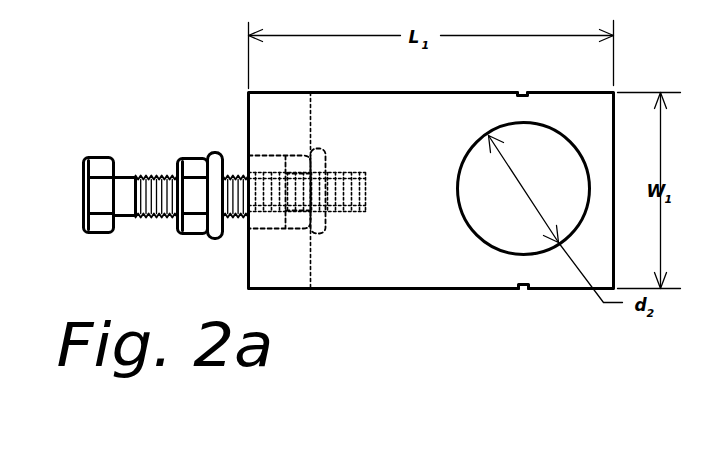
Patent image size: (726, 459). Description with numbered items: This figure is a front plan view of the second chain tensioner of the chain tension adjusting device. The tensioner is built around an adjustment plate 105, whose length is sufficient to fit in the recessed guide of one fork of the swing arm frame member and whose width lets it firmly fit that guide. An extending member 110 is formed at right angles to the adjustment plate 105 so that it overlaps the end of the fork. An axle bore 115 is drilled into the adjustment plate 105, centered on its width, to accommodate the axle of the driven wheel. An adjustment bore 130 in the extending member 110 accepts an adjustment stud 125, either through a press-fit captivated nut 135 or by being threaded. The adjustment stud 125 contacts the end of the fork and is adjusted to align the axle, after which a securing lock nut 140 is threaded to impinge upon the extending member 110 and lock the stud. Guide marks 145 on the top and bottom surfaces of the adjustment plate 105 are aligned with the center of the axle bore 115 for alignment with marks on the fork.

The adjustment plate 105 is at (510, 288).
The extending member 110 is at (312, 250).
The axle bore 115 is at (482, 243).
The adjustment stud 125 is at (128, 177).
The adjustment bore 130 is at (277, 228).
The captivated nut 135 is at (325, 150).
The securing lock nut 140 is at (197, 157).
The guide marks 145 is at (524, 91).